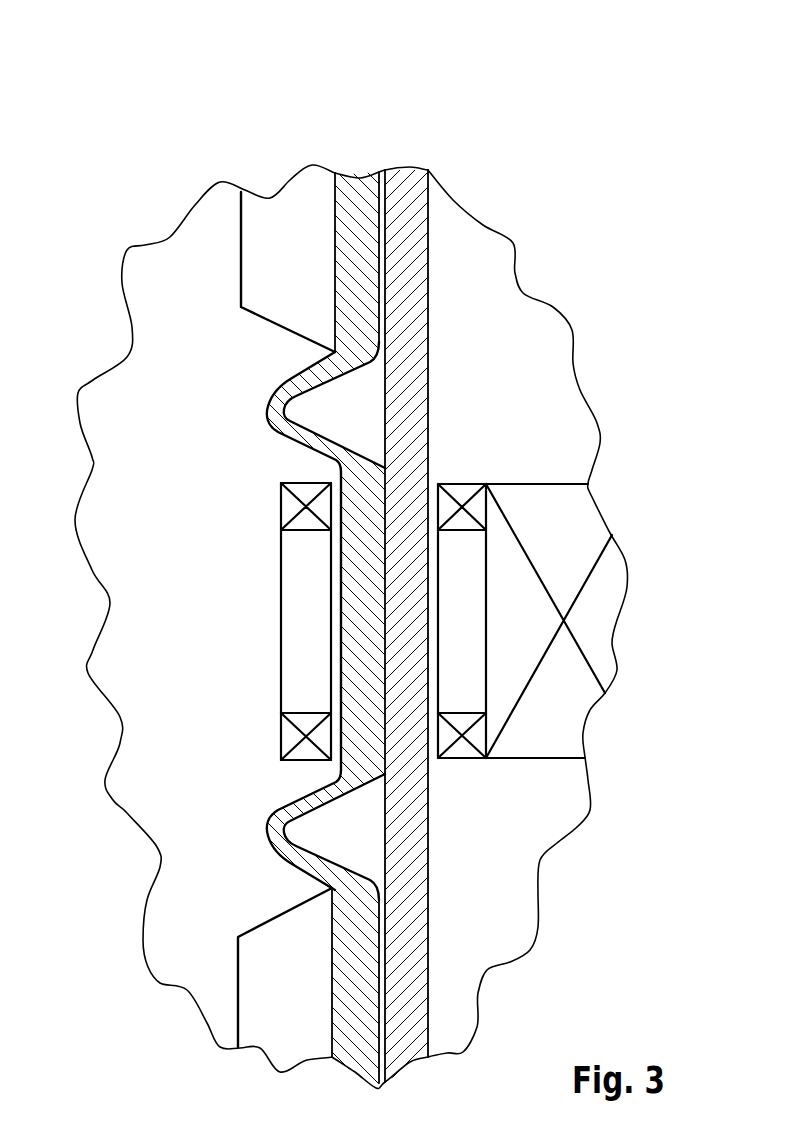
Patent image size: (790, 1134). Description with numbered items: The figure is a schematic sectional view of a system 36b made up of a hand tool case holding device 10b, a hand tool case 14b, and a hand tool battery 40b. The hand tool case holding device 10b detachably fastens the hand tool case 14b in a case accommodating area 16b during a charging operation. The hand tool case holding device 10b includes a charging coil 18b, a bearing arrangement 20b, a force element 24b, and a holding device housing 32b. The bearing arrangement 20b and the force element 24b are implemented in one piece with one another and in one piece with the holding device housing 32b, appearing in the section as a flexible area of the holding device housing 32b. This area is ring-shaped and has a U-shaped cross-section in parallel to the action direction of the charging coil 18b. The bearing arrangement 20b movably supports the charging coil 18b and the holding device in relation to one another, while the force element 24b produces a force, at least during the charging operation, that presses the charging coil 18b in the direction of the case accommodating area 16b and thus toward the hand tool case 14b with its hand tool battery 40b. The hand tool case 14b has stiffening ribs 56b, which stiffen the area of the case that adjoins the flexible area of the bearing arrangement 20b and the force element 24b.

The hand tool case holding device 10b is at (236, 93).
The hand tool case 14b is at (460, 556).
The case accommodating area 16b is at (406, 626).
The charging coil 18b is at (250, 611).
The bearing arrangement 20b is at (251, 621).
The force element 24b is at (272, 413).
The holding device housing 32b is at (251, 630).
The system 36b is at (381, 146).
The hand tool battery 40b is at (598, 608).
The stiffening ribs 56b is at (253, 262).